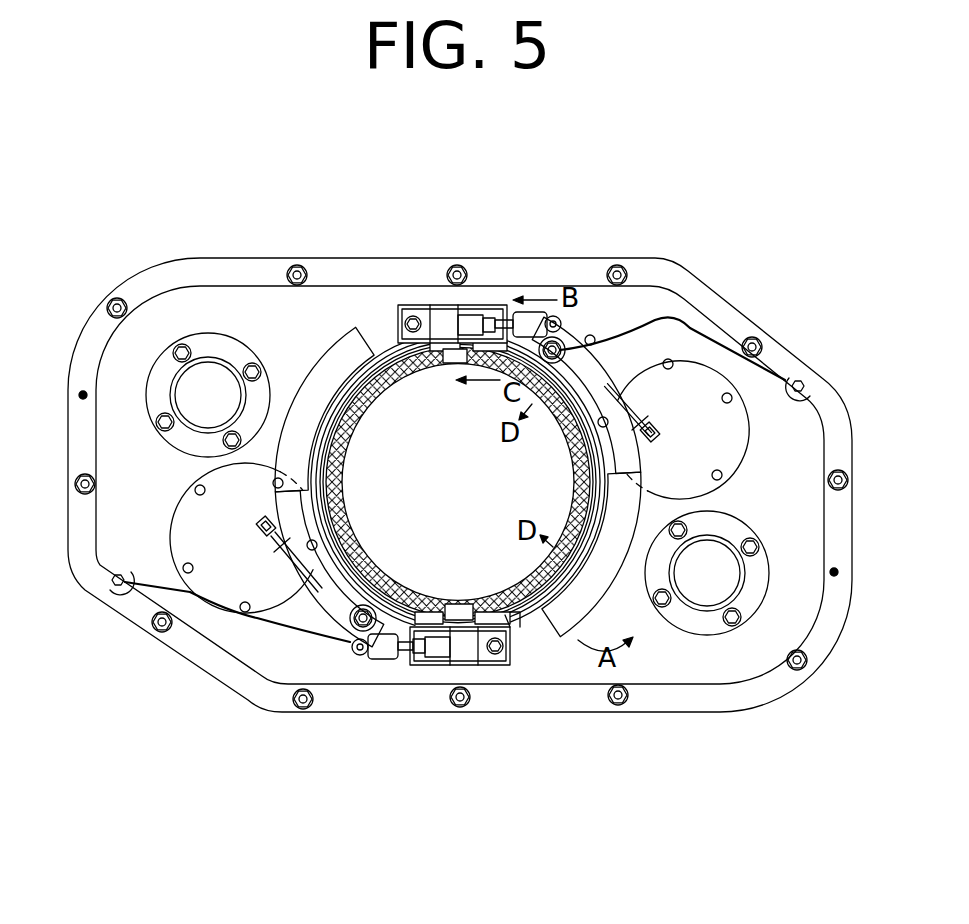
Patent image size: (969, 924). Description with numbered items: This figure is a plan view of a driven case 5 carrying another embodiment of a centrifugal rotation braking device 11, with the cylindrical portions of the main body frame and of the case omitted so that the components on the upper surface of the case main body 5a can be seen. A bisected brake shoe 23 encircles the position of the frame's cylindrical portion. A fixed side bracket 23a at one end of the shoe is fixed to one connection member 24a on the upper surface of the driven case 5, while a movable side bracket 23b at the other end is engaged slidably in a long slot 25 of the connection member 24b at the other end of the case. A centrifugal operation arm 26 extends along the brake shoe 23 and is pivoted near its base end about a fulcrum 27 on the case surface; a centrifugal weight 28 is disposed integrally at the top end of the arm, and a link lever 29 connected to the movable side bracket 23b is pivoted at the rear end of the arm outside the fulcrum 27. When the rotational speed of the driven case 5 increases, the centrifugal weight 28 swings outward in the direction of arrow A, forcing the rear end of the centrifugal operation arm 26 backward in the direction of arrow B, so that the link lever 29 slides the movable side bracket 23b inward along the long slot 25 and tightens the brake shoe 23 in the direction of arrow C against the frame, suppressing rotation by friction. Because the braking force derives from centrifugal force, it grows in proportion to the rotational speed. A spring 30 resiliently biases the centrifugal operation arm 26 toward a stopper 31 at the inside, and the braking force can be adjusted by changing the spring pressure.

The driven case 5 is at (289, 250).
The case main body 5a is at (158, 312).
The braking device 11 is at (370, 428).
The brake shoe 23 is at (398, 600).
The fixed side bracket 23a is at (485, 626).
The movable side bracket 23b is at (505, 305).
The connection member 24a is at (480, 667).
The connection member 24b is at (412, 305).
The long slot 25 is at (470, 315).
The centrifugal operation arm 26 is at (690, 330).
The fulcrum 27 is at (585, 358).
The centrifugal weight 28 is at (344, 338).
The link lever 29 is at (540, 338).
The spring 30 is at (652, 422).
The stopper 31 is at (570, 640).